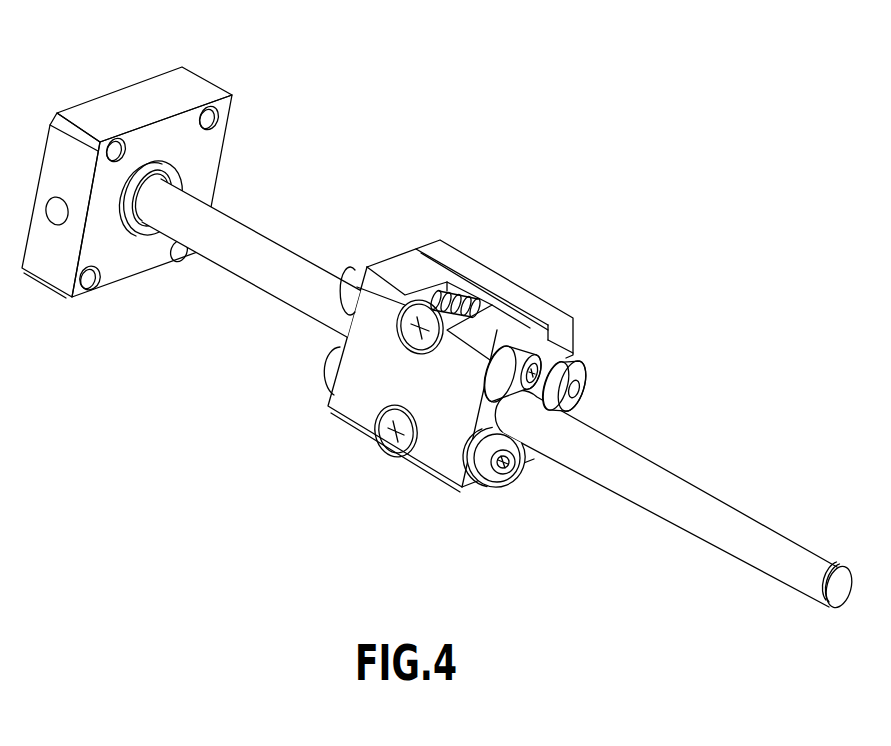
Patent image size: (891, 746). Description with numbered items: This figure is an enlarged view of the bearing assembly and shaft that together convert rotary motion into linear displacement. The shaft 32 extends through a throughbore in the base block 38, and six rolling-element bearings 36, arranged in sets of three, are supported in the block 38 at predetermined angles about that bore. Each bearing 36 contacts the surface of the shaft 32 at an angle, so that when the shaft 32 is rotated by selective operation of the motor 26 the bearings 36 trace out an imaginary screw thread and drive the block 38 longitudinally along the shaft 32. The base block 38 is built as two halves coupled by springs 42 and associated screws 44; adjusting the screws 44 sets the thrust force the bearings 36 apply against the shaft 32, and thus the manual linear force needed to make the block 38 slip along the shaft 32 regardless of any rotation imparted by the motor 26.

The motor 26 is at (157, 92).
The shaft 32 is at (243, 233).
The rolling-element bearings 36 is at (522, 337).
The base block 38 is at (440, 453).
The springs 42 is at (453, 303).
The screws 44 is at (410, 312).